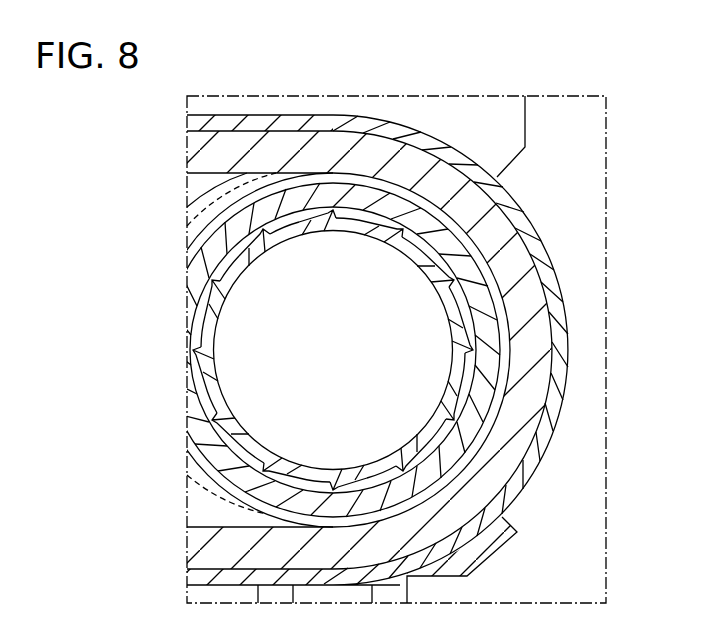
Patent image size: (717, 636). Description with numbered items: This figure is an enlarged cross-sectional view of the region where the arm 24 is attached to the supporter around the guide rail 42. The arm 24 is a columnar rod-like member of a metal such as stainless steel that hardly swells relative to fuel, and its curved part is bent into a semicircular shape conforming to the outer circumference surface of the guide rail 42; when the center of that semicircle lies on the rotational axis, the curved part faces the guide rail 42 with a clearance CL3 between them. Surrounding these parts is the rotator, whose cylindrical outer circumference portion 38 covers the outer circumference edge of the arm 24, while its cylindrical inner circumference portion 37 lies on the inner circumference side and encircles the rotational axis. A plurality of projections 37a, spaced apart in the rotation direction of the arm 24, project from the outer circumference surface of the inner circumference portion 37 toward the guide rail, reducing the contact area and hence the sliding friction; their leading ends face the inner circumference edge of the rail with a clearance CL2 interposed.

The guide rail 42 is at (463, 257).
The arm 24 is at (530, 305).
The outer circumference portion 38 is at (557, 337).
The clearance CL3 is at (395, 470).
The inner circumference portion 37 is at (450, 393).
The clearance CL2 is at (490, 420).
The projections 37a is at (403, 468).